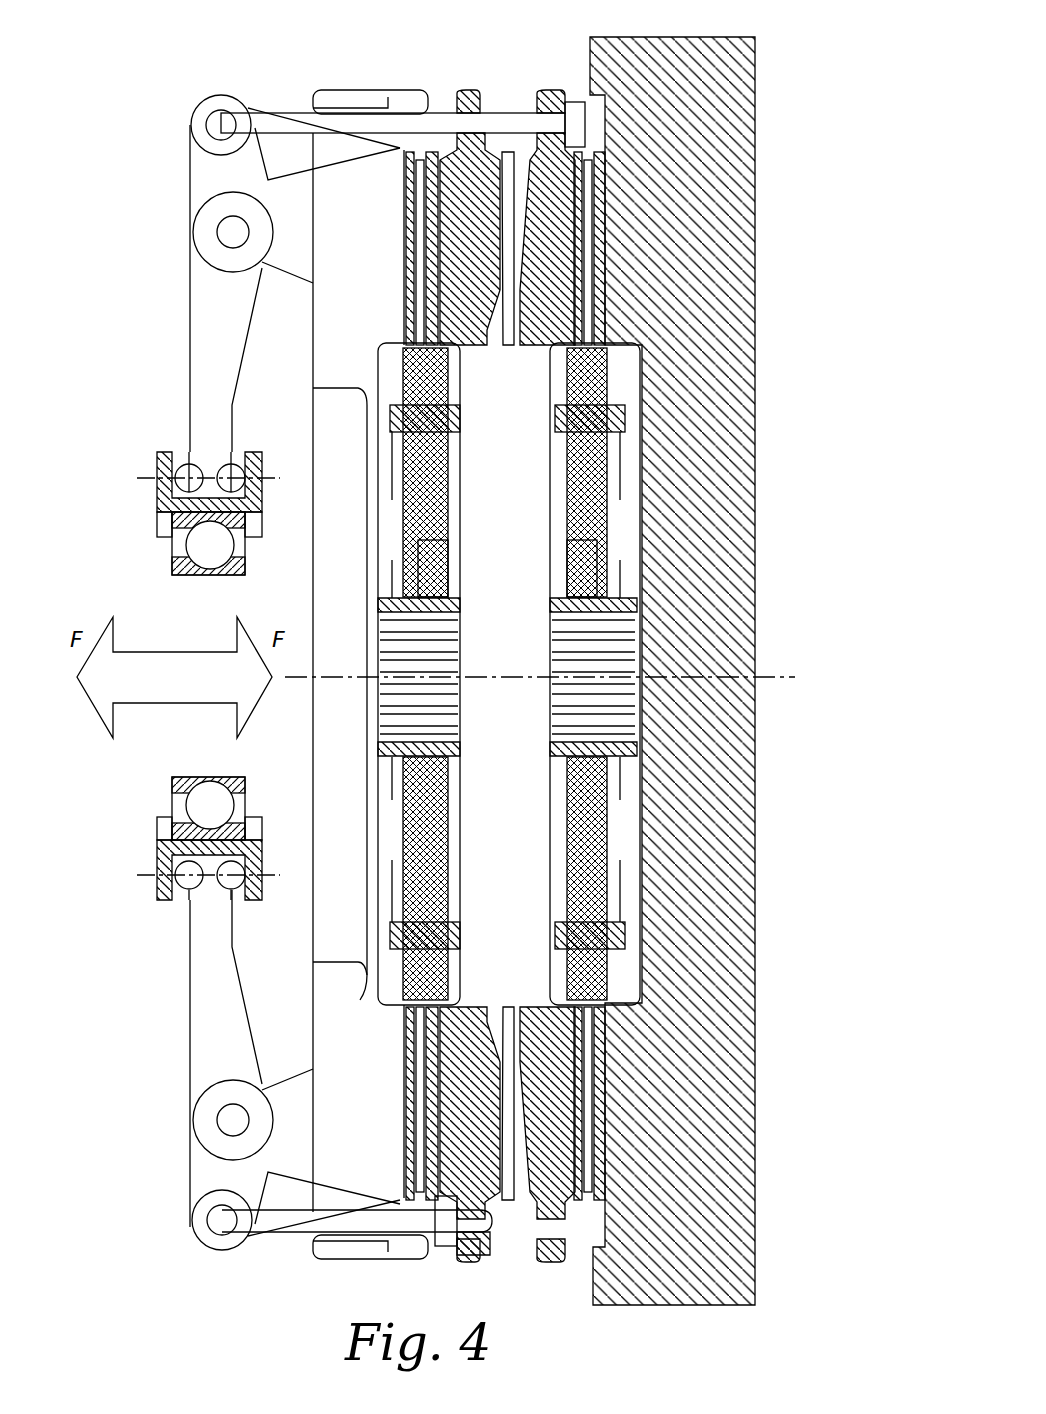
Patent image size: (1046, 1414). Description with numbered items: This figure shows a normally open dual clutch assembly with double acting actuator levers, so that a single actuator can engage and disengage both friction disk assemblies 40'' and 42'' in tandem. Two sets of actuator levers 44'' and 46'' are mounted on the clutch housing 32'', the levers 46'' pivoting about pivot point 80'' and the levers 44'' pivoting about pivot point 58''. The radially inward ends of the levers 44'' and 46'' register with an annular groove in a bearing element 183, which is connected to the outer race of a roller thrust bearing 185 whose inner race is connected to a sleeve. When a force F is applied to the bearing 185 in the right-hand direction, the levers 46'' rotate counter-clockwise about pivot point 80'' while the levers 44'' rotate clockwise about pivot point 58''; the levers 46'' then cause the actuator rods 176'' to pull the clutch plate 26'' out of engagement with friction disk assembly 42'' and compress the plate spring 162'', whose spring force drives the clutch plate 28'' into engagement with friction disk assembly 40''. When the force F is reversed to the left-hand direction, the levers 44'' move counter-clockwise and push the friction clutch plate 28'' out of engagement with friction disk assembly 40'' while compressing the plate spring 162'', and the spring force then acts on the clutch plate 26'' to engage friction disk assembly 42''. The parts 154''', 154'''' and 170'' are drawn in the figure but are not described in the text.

The actuator rods 176'' is at (388, 77).
The clutch plate 28'' is at (472, 631).
The clutch plate 26'' is at (547, 631).
The pivot point 80'' is at (186, 227).
The clutch housing 32'' is at (358, 672).
The actuator levers 46'' is at (252, 308).
The plate spring 162'' is at (423, 676).
The friction disk assembly 42'' is at (695, 656).
The bearing element 183 is at (158, 455).
The roller thrust bearing 185 is at (205, 548).
The right shaft 154'''' is at (715, 544).
The left shaft 154''' is at (348, 576).
The friction disk assembly 40'' is at (453, 674).
The actuator levers 44'' is at (252, 1058).
The pivot point 58'' is at (189, 1120).
The lower tie bar and bracket 170'' is at (342, 1246).